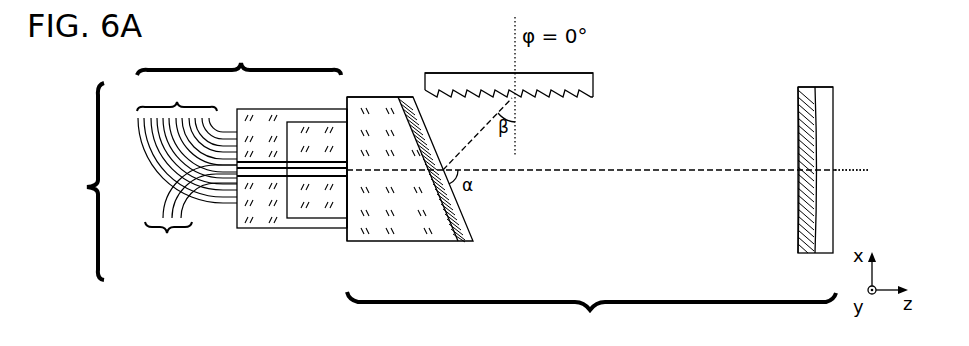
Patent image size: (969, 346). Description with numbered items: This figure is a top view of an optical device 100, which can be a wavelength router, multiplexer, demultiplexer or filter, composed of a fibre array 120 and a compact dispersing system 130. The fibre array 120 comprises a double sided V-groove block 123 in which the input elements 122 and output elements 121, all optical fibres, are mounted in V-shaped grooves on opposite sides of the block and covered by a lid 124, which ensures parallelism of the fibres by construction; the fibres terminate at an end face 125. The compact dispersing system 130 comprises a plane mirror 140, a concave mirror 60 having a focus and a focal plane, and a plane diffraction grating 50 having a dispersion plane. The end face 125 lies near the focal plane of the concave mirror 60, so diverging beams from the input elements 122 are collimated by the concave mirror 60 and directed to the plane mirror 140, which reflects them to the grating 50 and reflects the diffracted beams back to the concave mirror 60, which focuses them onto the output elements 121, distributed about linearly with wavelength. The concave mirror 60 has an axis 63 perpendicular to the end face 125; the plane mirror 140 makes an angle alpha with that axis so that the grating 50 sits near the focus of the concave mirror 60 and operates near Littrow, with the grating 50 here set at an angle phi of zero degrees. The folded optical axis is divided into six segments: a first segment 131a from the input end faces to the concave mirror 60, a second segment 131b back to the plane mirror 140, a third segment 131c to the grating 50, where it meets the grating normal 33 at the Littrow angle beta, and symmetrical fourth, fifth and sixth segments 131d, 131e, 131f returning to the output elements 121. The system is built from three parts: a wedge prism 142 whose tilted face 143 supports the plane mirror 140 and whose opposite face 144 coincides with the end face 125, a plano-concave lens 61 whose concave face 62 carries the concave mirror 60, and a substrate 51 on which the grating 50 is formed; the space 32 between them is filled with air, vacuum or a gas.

The optical device 100 is at (73, 181).
The fibre array 120 is at (239, 56).
The output elements 121 is at (187, 141).
The input elements 122 is at (191, 213).
The double sided V-groove block 123 is at (257, 230).
The lid 124 is at (320, 203).
The end face 125 is at (343, 125).
The plane mirror 140 is at (473, 242).
The wedge prism 142 is at (372, 110).
The tilted face 143 is at (463, 214).
The opposite face 144 is at (345, 243).
The compact dispersing system 130 is at (608, 257).
The first segment of the optical axis 131a is at (715, 172).
The second segment of the optical axis 131b is at (680, 227).
The third segment of the optical axis 131c is at (478, 133).
The fourth segment of the optical axis 131d is at (533, 225).
The fifth segment of the optical axis 131e is at (680, 250).
The sixth segment of the optical axis 131f is at (678, 272).
The normal of the grating 33 is at (516, 138).
The space 32 is at (695, 120).
The plane diffraction grating 50 is at (468, 86).
The substrate 51 is at (578, 82).
The concave mirror 60 is at (802, 207).
The plano-concave lens 61 is at (823, 100).
The concave face 62 is at (803, 235).
The axis of the concave mirror 63 is at (852, 170).